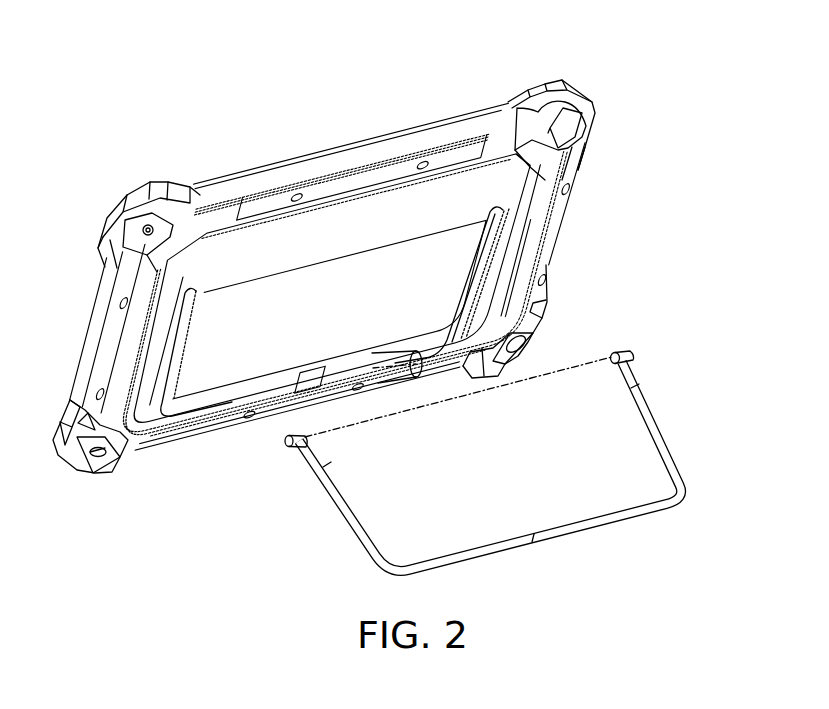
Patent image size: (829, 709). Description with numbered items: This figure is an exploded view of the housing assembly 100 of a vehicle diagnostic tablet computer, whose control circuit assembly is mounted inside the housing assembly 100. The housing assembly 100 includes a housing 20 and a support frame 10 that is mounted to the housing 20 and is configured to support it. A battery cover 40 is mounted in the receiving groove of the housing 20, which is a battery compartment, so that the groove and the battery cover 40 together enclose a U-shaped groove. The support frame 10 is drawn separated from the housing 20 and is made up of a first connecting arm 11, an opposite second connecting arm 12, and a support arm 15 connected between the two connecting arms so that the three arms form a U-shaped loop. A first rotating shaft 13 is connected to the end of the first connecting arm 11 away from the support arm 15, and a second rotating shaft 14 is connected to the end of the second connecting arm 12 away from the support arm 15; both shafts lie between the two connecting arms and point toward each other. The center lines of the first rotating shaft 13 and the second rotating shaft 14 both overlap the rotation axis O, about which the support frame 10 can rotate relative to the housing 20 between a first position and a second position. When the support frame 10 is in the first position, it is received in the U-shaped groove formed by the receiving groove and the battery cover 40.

The housing assembly 100 is at (611, 42).
The housing 20 is at (548, 184).
The battery cover 40 is at (435, 297).
The support frame 10 is at (662, 359).
The first connecting arm 11 is at (343, 512).
The second connecting arm 12 is at (657, 418).
The first rotating shaft 13 is at (287, 442).
The second rotating shaft 14 is at (625, 351).
The support arm 15 is at (507, 547).
The rotation axis O is at (296, 447).